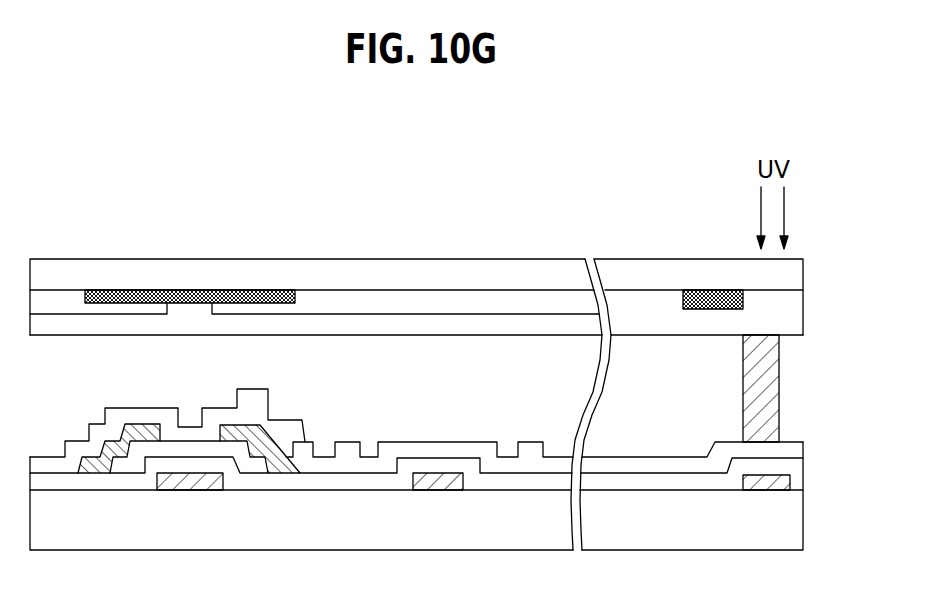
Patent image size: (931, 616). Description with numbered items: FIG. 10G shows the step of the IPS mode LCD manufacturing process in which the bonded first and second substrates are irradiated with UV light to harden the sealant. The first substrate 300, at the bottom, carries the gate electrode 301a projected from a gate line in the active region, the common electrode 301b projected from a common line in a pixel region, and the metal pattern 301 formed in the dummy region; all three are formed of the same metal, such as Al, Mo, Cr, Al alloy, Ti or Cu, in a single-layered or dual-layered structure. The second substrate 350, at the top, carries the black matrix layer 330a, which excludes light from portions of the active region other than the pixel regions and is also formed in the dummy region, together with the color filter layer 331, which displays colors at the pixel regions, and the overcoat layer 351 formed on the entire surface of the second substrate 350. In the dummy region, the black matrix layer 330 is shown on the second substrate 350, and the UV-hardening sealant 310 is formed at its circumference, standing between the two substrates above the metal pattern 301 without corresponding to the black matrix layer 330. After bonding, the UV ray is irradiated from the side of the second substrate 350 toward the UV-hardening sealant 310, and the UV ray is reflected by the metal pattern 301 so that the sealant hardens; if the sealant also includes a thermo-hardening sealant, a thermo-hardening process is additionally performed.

The second substrate 350 is at (795, 278).
The color filter layer 331 is at (517, 297).
The overcoat layer 351 is at (423, 325).
The black matrix layer 330a is at (211, 297).
The black matrix layer 330 is at (703, 290).
The UV-hardening sealant 310 is at (772, 388).
The first substrate 300 is at (795, 527).
The metal pattern 301 is at (787, 481).
The gate electrode 301a is at (188, 490).
The common electrode 301b is at (437, 490).